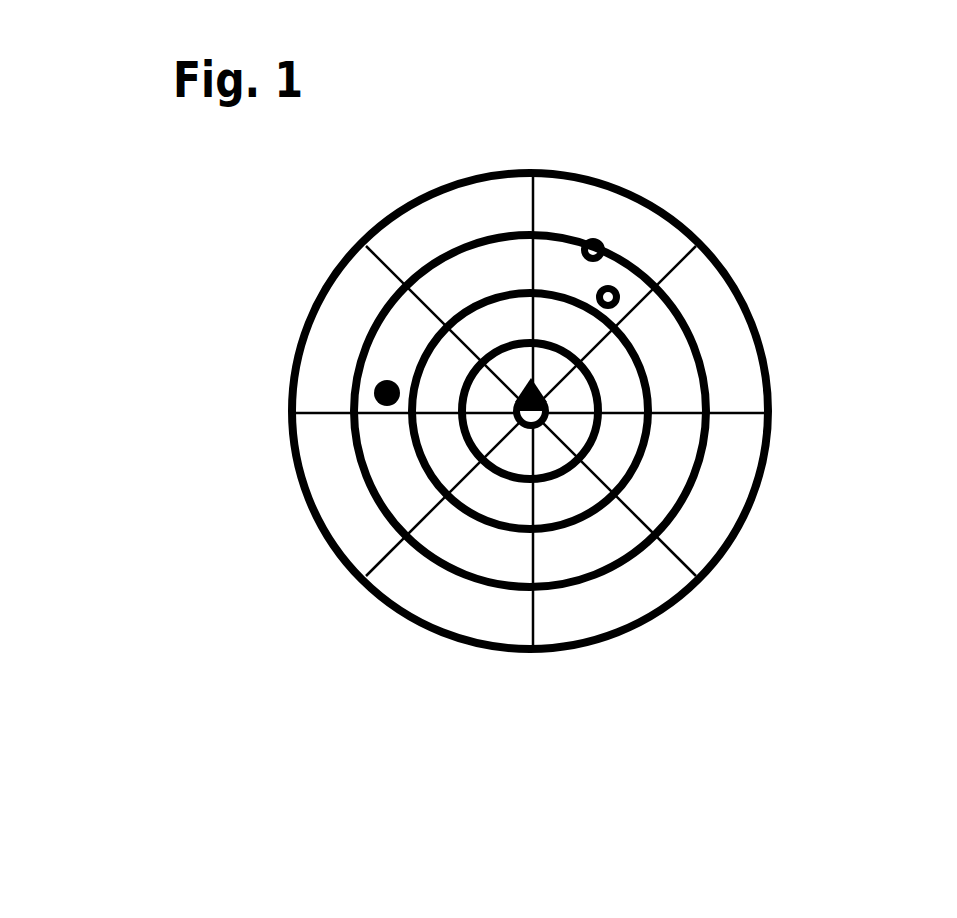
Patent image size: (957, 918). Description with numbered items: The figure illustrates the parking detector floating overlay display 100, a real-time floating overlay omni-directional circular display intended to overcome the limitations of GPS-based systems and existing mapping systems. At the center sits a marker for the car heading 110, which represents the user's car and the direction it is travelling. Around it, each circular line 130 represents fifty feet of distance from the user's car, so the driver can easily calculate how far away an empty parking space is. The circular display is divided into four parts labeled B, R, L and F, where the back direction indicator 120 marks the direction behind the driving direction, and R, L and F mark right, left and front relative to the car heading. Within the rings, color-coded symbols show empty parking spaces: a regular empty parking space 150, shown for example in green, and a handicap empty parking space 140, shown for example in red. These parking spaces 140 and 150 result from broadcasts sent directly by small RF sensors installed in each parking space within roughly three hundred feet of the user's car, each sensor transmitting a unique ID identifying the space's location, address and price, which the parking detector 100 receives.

The floating overlay display 100 is at (525, 162).
The car heading 110 is at (523, 438).
The back direction indicator 120 is at (545, 623).
The circular line 130 is at (463, 450).
The handicap empty parking space 140 is at (373, 387).
The regular empty parking space 150 is at (617, 283).